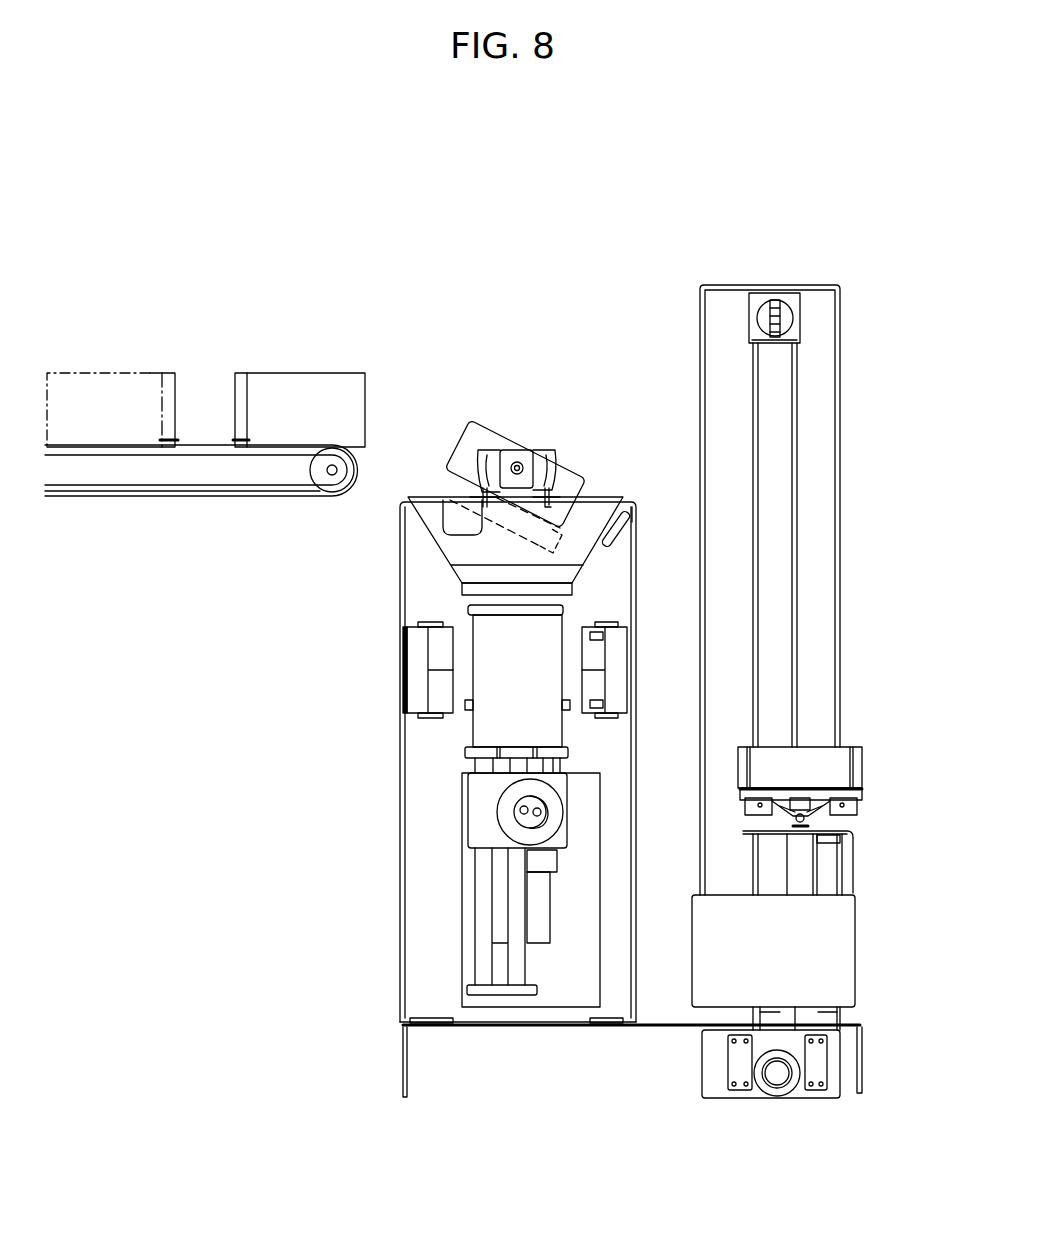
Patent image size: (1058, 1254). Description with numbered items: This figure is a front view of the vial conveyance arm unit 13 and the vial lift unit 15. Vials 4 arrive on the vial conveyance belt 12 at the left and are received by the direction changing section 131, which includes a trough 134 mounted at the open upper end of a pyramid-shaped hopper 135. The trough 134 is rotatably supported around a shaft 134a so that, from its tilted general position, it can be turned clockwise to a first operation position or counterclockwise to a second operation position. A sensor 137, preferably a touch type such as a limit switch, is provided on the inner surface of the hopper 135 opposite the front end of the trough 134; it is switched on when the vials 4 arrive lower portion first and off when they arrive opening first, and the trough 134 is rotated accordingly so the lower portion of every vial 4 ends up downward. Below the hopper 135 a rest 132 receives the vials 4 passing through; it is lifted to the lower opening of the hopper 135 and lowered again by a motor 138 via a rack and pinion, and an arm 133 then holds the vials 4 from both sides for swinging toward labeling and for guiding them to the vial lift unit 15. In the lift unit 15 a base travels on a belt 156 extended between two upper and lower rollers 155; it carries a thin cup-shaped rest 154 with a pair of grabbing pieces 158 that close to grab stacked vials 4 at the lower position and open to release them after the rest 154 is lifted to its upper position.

The vial 4 is at (62, 385).
The vial conveyance belt 12 is at (167, 514).
The vial conveyance arm unit 13 is at (447, 283).
The vial lift unit 15 is at (758, 237).
The direction changing section 131 is at (383, 532).
The rest 132 is at (465, 752).
The arm 133 is at (407, 650).
The trough 134 is at (487, 420).
The shaft 134a is at (518, 462).
The hopper 135 is at (440, 565).
The sensor 137 is at (611, 547).
The motor 138 is at (475, 828).
The rest 154 is at (862, 792).
The roller 155 is at (800, 317).
The belt 156 is at (797, 533).
The grabbing piece 158 is at (755, 768).